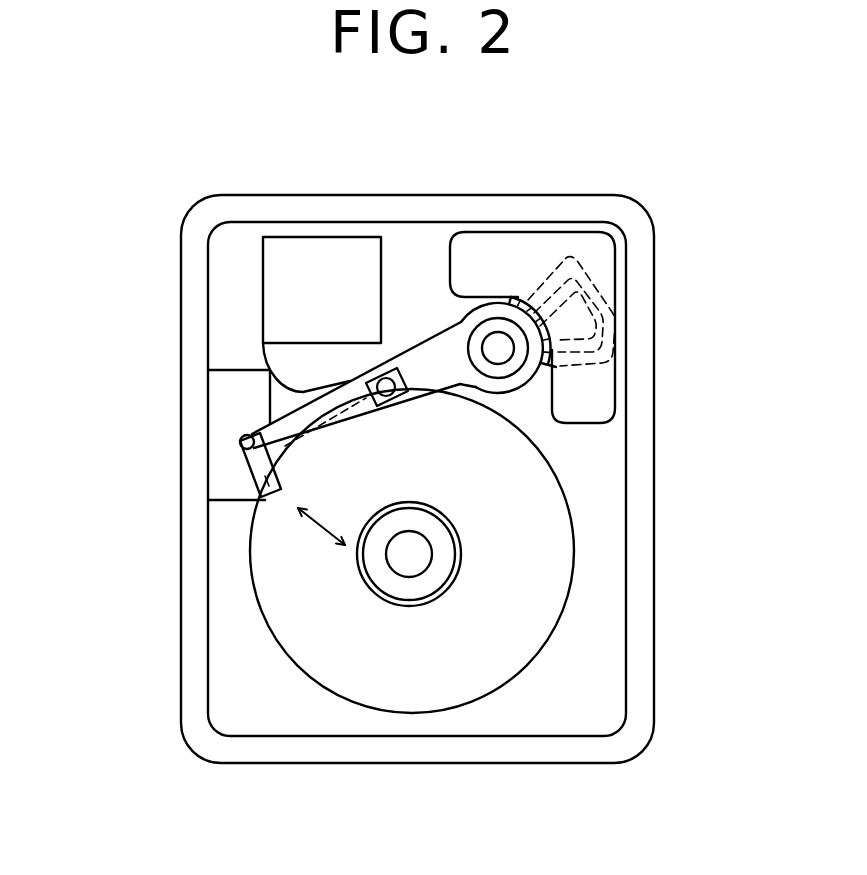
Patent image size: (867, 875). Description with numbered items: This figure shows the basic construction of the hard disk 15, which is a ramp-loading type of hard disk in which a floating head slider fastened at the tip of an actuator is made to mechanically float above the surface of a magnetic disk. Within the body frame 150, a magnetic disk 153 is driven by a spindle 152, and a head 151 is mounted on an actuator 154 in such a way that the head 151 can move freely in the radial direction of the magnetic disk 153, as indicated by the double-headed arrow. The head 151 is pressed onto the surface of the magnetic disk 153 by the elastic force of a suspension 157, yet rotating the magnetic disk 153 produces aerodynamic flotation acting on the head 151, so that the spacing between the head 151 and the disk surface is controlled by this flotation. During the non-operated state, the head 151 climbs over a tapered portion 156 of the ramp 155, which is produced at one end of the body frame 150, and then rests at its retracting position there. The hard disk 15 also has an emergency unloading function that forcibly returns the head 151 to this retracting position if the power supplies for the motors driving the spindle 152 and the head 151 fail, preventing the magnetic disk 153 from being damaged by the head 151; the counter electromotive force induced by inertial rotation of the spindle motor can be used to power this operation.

The hard disk 15 is at (672, 188).
The body frame 150 is at (567, 764).
The head 151 is at (241, 439).
The spindle 152 is at (460, 547).
The magnetic disk 153 is at (565, 603).
The actuator 154 is at (428, 341).
The ramp 155 is at (217, 473).
The tapered portion 156 is at (275, 497).
The suspension 157 is at (340, 421).